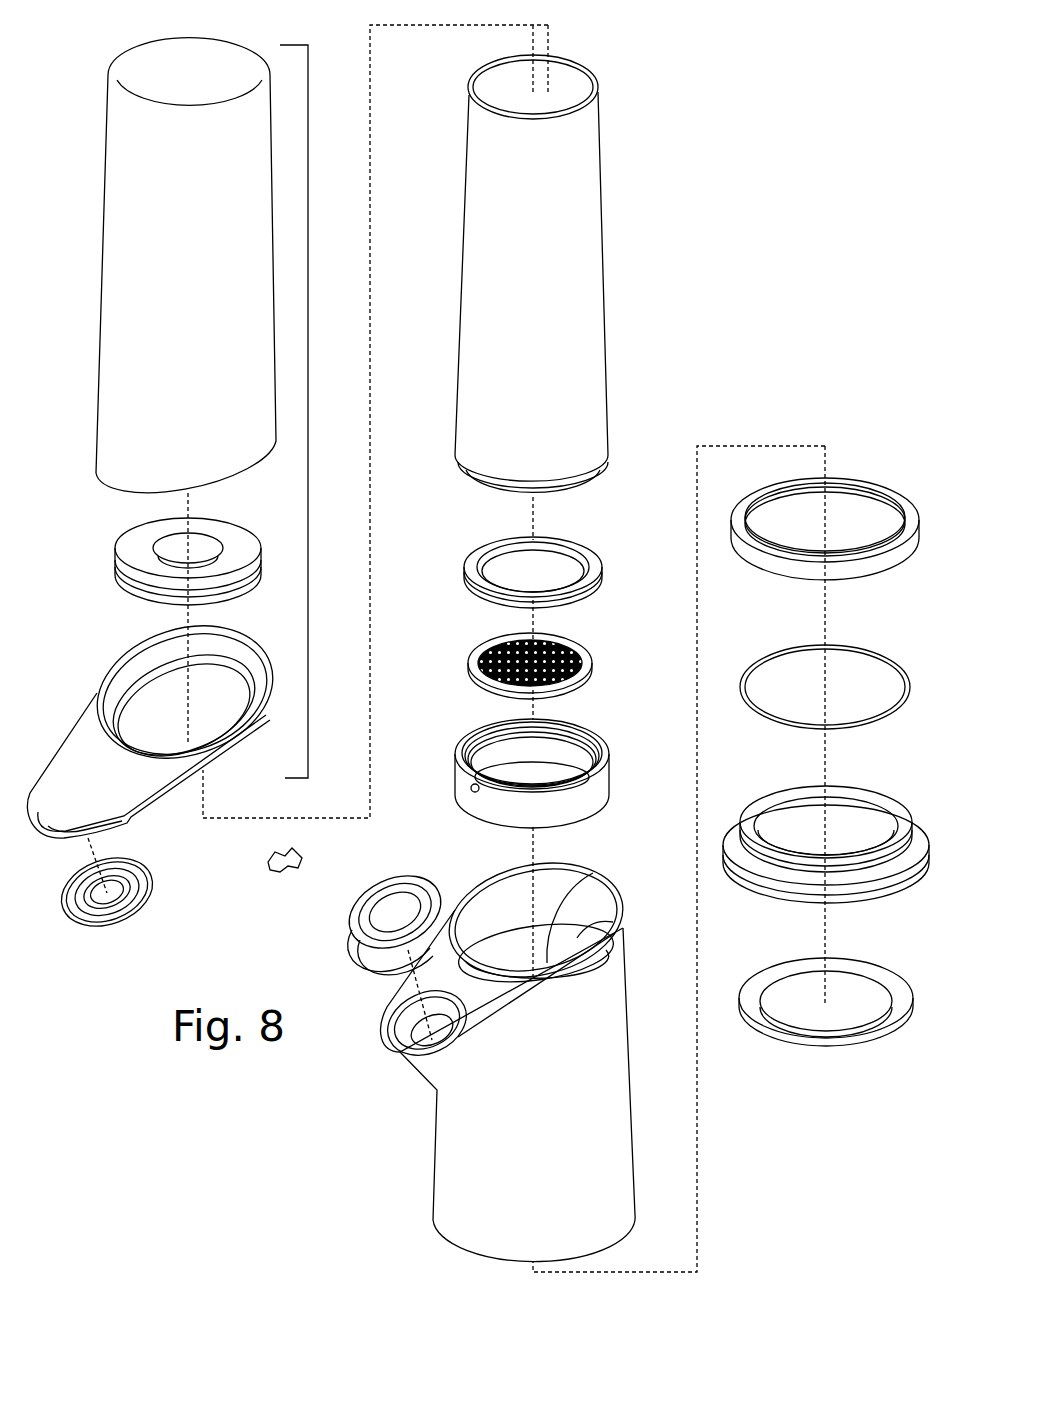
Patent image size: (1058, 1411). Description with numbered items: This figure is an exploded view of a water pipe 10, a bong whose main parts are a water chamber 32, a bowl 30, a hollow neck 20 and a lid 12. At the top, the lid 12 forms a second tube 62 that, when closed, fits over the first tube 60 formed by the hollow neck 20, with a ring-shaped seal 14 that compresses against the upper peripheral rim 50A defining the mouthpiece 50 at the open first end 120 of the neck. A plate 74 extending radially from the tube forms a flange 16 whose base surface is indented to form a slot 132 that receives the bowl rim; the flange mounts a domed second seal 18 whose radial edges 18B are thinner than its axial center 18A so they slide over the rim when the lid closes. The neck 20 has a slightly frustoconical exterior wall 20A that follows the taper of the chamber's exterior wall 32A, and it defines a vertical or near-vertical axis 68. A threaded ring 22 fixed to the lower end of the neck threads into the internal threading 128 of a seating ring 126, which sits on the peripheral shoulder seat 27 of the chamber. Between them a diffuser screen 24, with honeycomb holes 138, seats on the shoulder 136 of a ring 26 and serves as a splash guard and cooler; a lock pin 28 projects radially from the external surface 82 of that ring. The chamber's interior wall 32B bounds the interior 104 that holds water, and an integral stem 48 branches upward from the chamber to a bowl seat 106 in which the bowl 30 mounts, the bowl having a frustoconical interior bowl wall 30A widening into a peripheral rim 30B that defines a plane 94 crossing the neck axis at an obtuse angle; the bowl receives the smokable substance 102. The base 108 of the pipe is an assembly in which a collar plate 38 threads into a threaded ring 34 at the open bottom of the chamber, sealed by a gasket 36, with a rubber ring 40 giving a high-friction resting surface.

The water pipe 10 is at (725, 213).
The lid 12 is at (308, 163).
The seal 14 is at (115, 560).
The flange 16 is at (88, 743).
The seal 18 is at (62, 912).
The axial center 18A is at (115, 922).
The radial edges 18B is at (90, 925).
The hollow neck 20 is at (605, 240).
The exterior wall 20A is at (504, 277).
The threaded ring 22 is at (600, 582).
The diffuser screen 24 is at (595, 667).
The ring 26 is at (612, 790).
The peripheral shoulder seat 27 is at (612, 933).
The pin 28 is at (467, 787).
The bowl 30 is at (355, 910).
The interior bowl wall 30A is at (387, 922).
The peripheral rim 30B is at (407, 880).
The water chamber 32 is at (435, 1140).
The exterior wall 32A is at (587, 1173).
The interior wall 32B is at (518, 972).
The threaded ring 34 is at (866, 583).
The gasket 36 is at (880, 720).
The collar plate 38 is at (862, 903).
The rubber ring 40 is at (850, 1060).
The stem 48 is at (375, 1018).
The mouthpiece 50 is at (598, 73).
The upper peripheral rim 50A is at (562, 62).
The first tube 60 is at (605, 320).
The second tube 62 is at (98, 295).
The axis 68 is at (537, 517).
The plate 74 is at (78, 773).
The external surface 82 is at (490, 805).
The plane 94 is at (482, 1003).
The substance 102 is at (372, 870).
The interior 104 is at (593, 870).
The bowl seat 106 is at (403, 1012).
The base 108 is at (835, 1075).
The first end 120 is at (585, 68).
The seating ring 126 is at (462, 578).
The internal threading 128 is at (490, 730).
The slot 132 is at (120, 832).
The shoulder 136 is at (590, 722).
The holes 138 is at (486, 630).